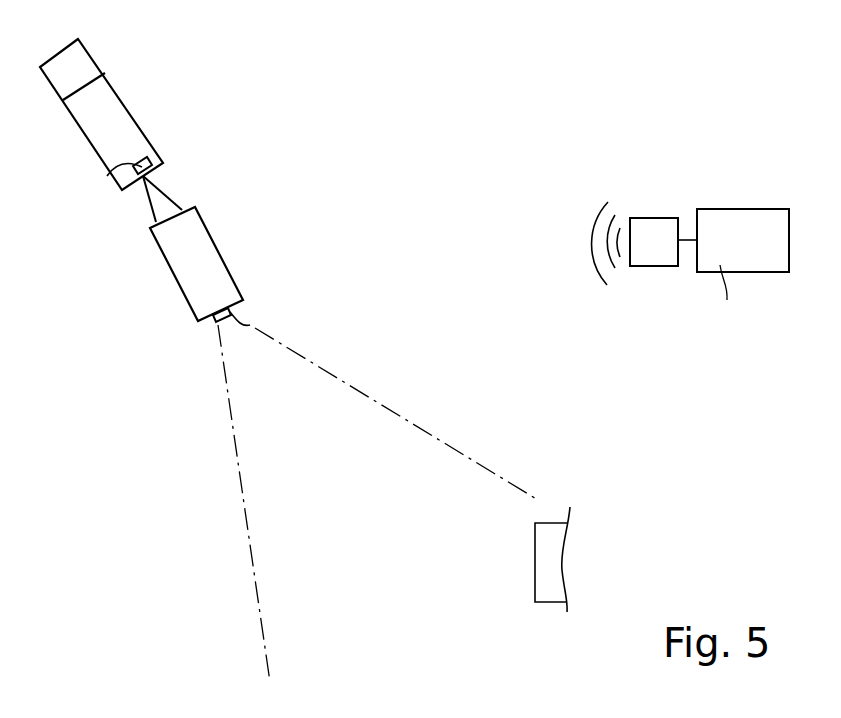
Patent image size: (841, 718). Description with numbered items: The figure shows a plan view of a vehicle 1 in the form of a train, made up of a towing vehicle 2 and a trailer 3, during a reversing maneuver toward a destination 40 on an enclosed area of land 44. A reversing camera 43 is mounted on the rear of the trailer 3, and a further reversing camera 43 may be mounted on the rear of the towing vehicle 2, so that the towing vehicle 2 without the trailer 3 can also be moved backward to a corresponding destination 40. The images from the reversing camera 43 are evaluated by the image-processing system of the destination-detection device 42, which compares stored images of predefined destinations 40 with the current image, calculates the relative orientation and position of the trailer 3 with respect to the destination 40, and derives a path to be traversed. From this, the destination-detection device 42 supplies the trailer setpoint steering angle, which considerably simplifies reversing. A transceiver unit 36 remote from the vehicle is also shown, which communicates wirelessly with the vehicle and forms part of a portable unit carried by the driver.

The vehicle 1 is at (154, 170).
The towing vehicle 2 is at (132, 134).
The trailer 3 is at (200, 238).
The reversing camera 43 is at (107, 176).
The enclosed area of land 44 is at (186, 553).
The destination 40 is at (550, 558).
The transceiver unit 36 is at (669, 253).
The destination-detection device 42 is at (758, 253).